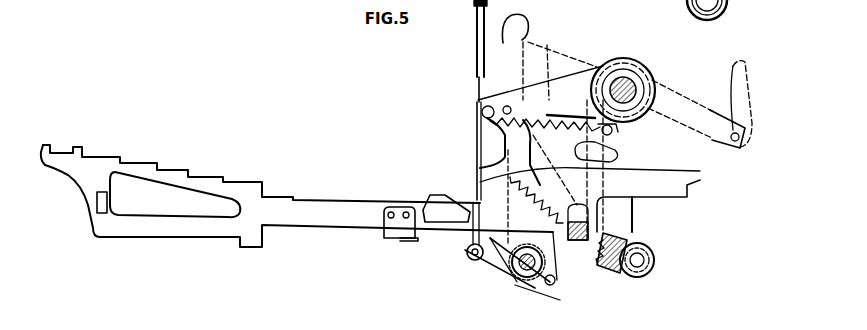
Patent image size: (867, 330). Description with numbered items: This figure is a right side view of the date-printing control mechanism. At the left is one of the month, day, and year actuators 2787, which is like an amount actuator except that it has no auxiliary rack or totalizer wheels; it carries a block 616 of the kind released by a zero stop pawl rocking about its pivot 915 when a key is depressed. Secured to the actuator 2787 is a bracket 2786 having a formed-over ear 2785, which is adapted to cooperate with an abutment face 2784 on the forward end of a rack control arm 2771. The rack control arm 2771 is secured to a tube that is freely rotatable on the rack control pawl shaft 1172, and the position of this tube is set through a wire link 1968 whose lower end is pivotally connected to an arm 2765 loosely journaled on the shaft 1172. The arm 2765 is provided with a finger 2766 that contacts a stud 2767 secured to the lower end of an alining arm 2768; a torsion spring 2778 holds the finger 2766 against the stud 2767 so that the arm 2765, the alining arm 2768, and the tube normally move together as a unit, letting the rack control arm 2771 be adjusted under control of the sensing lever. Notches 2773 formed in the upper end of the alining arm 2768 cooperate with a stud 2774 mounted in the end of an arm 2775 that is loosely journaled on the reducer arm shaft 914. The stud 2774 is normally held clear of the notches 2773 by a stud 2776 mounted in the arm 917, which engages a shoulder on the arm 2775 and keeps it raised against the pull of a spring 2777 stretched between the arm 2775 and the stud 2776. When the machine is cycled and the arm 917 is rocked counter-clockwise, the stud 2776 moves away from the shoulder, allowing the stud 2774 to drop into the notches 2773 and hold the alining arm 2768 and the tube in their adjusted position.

The block 616 is at (97, 203).
The month, day, and year actuators 2787 is at (265, 197).
The abutment face 2784 is at (423, 203).
The bracket 2786 is at (400, 230).
The formed-over ear 2785 is at (403, 242).
The rack control arm 2771 is at (461, 181).
The stud 2774 is at (488, 100).
The arm 2775 is at (508, 97).
The notches 2773 is at (490, 130).
The wire link 1968 is at (500, 146).
The alining arm 2768 is at (497, 158).
The spring 2777 is at (545, 112).
The reducer arm shaft 914 is at (633, 80).
The arm 917 is at (648, 107).
The stud 2776 is at (613, 130).
The arm 2765 is at (472, 259).
The rack control pawl shaft 1172 is at (510, 266).
The finger 2766 is at (530, 282).
The stud 2767 is at (552, 286).
The torsion spring 2778 is at (583, 272).
The pivot 915 is at (633, 217).